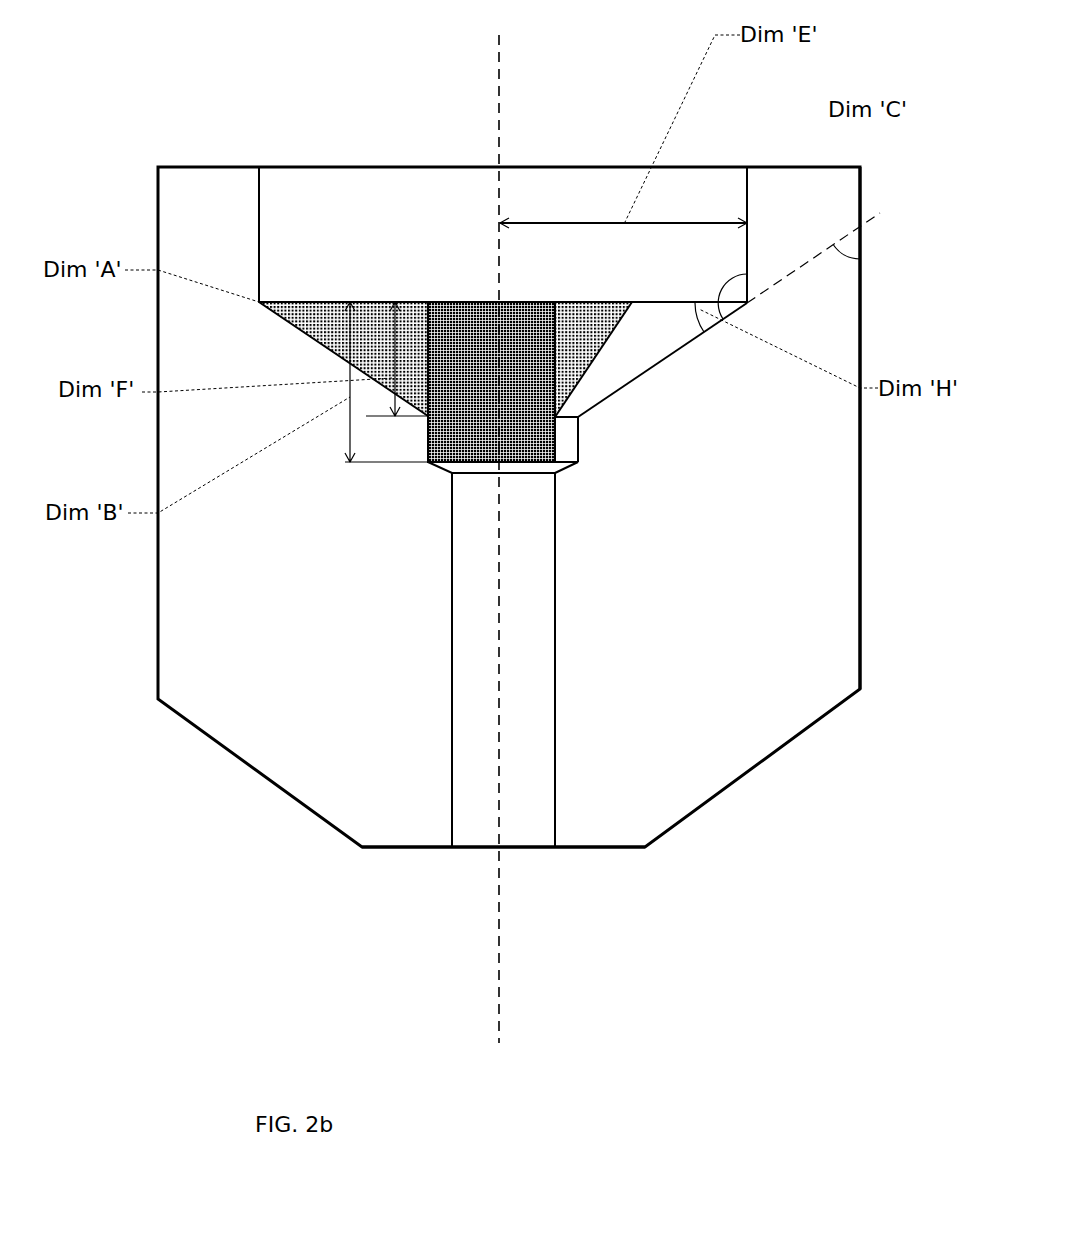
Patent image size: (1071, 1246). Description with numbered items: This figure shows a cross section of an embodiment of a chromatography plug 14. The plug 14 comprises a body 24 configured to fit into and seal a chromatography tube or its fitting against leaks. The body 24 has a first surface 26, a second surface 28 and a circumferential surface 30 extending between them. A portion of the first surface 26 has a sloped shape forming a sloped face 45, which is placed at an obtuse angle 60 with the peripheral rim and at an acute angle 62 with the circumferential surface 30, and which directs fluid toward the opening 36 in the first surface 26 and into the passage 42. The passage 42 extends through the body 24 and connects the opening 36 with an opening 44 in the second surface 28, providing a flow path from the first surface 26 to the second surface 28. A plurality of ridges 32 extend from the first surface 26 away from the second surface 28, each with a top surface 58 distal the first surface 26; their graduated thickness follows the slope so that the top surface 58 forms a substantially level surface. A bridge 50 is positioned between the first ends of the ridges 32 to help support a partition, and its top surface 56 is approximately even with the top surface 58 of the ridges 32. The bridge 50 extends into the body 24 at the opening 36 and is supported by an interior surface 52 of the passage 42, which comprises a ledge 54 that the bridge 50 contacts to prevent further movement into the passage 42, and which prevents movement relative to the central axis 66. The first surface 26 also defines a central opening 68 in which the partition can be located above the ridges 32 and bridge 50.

The plug 14 is at (193, 145).
The body 24 is at (267, 690).
The first surface 26 is at (659, 362).
The second surface 28 is at (610, 848).
The circumferential surface 30 is at (860, 664).
The ridges 32 is at (322, 302).
The opening 36 is at (569, 420).
The passage 42 is at (540, 848).
The opening 44 is at (472, 848).
The sloped face 45 is at (692, 348).
The bridge 50 is at (462, 337).
The interior surface 52 is at (452, 784).
The ledge 54 is at (442, 474).
The top surface of the bridge 56 is at (517, 322).
The top surface of the ridges 58 is at (373, 302).
The obtuse angle 60 is at (727, 283).
The acute angle 62 is at (852, 258).
The central axis 66 is at (503, 975).
The central opening 68 is at (688, 200).